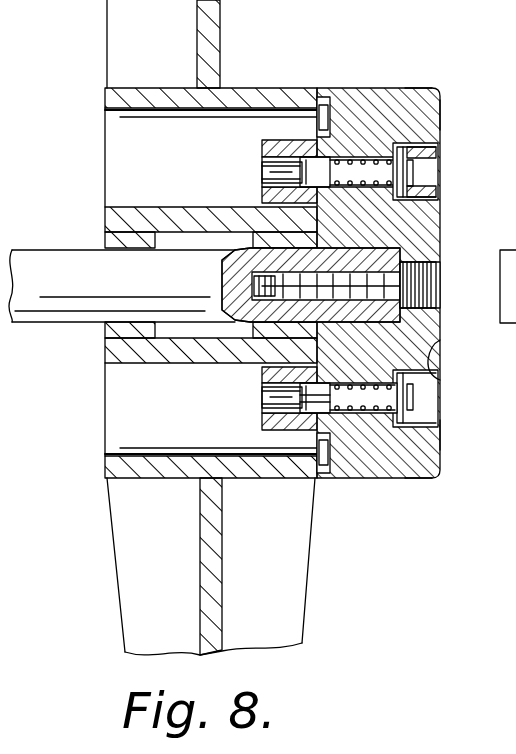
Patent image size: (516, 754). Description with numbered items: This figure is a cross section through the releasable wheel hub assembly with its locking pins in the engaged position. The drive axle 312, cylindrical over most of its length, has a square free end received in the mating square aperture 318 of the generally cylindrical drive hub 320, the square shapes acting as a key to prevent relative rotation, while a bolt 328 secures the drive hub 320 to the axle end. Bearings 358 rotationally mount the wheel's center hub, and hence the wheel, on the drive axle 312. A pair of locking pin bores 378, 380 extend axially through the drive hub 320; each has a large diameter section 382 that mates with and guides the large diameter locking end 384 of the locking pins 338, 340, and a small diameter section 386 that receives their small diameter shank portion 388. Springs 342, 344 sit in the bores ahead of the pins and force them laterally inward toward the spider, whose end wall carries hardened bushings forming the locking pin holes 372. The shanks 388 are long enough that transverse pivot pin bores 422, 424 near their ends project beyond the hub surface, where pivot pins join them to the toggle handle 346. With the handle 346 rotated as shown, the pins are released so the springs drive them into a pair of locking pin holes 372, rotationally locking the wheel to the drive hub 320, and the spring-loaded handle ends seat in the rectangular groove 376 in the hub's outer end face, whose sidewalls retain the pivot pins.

The drive axle 312 is at (50, 262).
The square aperture 318 is at (338, 248).
The drive hub 320 is at (365, 88).
The bolt 328 is at (433, 272).
The locking pin 338 is at (332, 96).
The locking pin 340 is at (330, 410).
The spring 342 is at (347, 157).
The spring 344 is at (337, 410).
The toggle handle 346 is at (438, 360).
The bearings 358 is at (107, 245).
The locking pin holes 372 is at (262, 403).
The groove 376 is at (430, 119).
The locking pin bore 378 is at (262, 379).
The locking pin bore 380 is at (327, 140).
The large diameter section 382 is at (436, 180).
The locking end 384 is at (262, 176).
The small diameter section 386 is at (412, 90).
The shank portion 388 is at (353, 180).
The pivot pin bore 422 is at (431, 173).
The pivot pin bore 424 is at (410, 394).